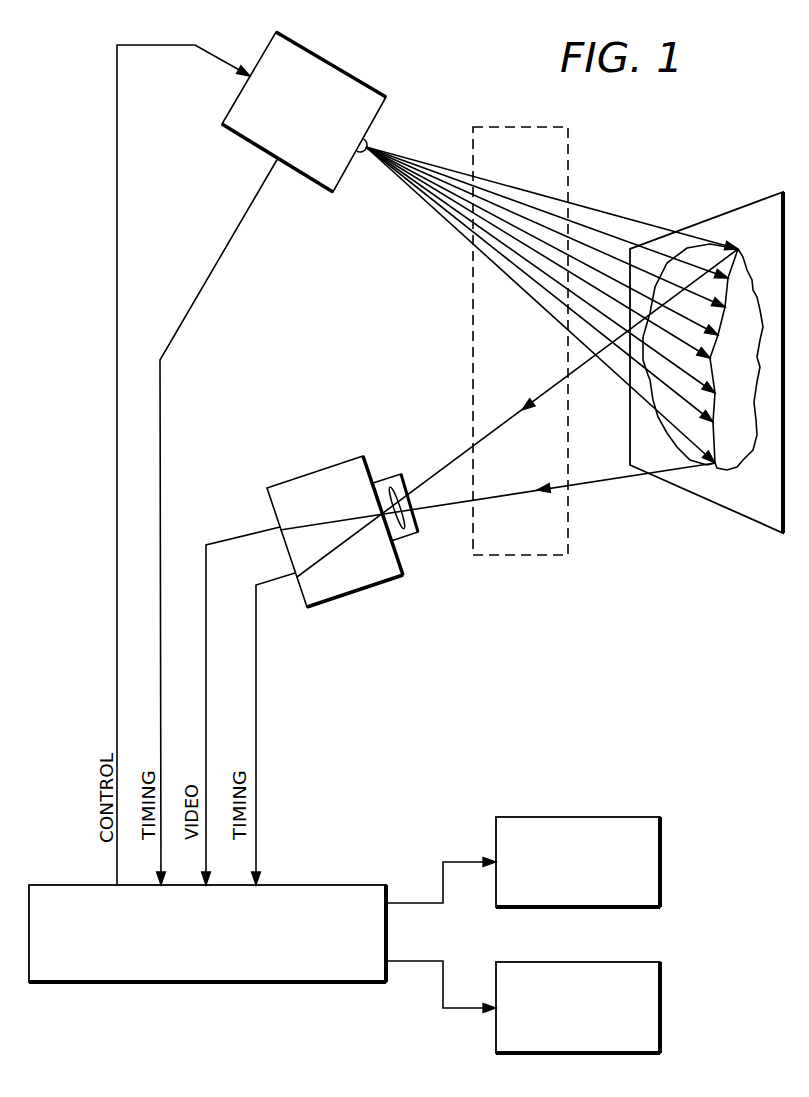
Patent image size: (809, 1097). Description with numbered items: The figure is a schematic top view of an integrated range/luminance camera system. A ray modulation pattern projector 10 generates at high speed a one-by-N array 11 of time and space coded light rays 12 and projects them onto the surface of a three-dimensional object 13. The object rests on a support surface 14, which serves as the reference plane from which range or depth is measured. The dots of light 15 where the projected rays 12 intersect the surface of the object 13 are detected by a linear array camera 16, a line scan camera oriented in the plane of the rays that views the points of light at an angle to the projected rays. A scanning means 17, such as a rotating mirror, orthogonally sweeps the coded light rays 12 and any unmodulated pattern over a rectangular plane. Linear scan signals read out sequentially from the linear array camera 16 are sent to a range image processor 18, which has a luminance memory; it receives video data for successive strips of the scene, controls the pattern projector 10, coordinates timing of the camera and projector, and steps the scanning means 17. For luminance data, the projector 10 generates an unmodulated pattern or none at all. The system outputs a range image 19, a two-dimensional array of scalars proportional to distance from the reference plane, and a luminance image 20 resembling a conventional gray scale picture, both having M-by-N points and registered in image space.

The ray modulation pattern projector 10 is at (265, 53).
The 1×N array 11 is at (427, 150).
The time and space coded light rays 12 is at (619, 202).
The three-dimensional object 13 is at (747, 448).
The support surface 14 is at (727, 494).
The dots of light 15 is at (757, 383).
The linear array camera 16 is at (292, 487).
The scanning means 17 is at (570, 492).
The range image processor 18 is at (320, 885).
The range image 19 is at (536, 817).
The luminance image 20 is at (661, 995).